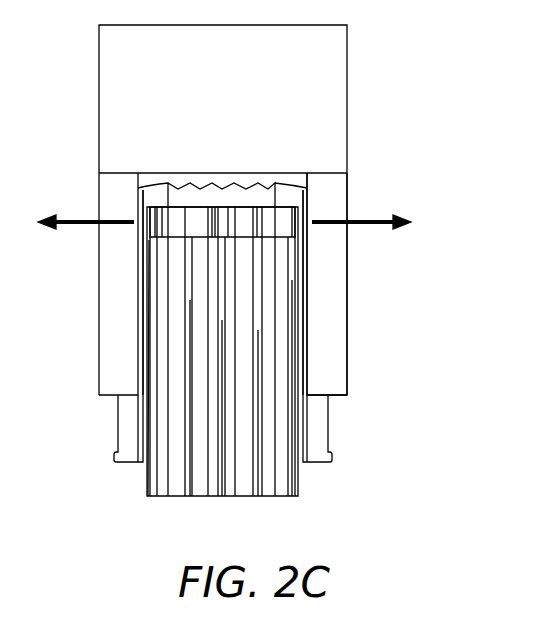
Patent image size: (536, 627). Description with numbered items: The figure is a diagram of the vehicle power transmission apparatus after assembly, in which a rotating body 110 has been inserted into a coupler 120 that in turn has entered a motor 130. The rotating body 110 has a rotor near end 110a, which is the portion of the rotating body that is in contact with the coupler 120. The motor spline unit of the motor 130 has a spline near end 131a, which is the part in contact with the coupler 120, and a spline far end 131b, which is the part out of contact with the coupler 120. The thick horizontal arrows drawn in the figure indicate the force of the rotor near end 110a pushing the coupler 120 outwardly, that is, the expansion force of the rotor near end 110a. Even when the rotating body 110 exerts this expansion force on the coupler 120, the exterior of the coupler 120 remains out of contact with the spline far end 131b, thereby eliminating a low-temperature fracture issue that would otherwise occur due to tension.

The motor 130 is at (377, 71).
The spline far end 131b is at (340, 199).
The spline near end 131a is at (342, 375).
The coupler 120 is at (340, 437).
The rotating body 110 is at (232, 365).
The rotor near end 110a is at (292, 247).